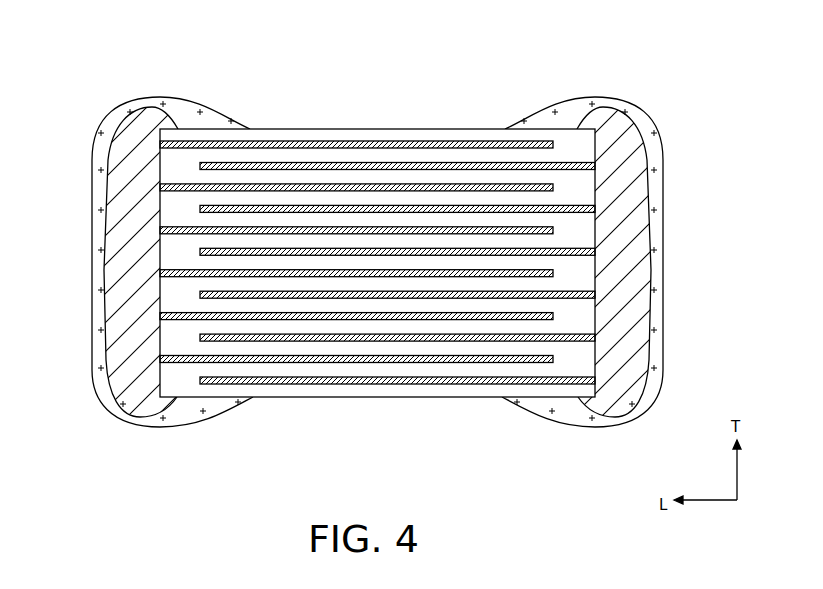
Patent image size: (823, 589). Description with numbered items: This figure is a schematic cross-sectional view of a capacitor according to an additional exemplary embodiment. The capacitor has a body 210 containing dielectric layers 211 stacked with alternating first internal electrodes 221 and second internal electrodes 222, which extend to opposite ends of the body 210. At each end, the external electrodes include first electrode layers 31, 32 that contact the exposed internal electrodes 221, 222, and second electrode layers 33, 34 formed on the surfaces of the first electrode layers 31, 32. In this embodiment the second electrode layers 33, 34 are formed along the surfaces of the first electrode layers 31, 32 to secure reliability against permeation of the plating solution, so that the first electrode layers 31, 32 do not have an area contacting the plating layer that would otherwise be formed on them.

The body 210 is at (370, 129).
The dielectric layer 211 is at (578, 187).
The first internal electrode 221 is at (180, 195).
The second internal electrode 222 is at (568, 213).
The first electrode layer 31 is at (127, 258).
The first electrode layer 32 is at (635, 280).
The second electrode layer 33 is at (100, 295).
The second electrode layer 34 is at (660, 320).